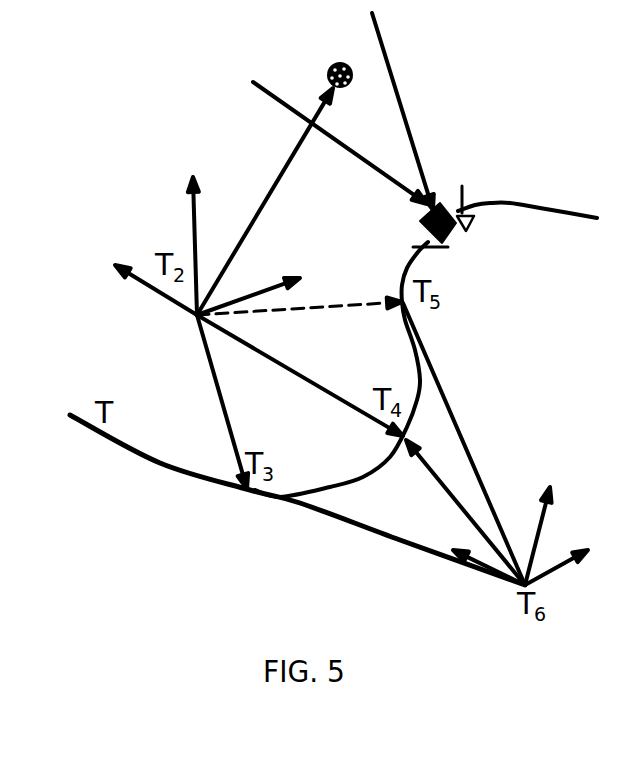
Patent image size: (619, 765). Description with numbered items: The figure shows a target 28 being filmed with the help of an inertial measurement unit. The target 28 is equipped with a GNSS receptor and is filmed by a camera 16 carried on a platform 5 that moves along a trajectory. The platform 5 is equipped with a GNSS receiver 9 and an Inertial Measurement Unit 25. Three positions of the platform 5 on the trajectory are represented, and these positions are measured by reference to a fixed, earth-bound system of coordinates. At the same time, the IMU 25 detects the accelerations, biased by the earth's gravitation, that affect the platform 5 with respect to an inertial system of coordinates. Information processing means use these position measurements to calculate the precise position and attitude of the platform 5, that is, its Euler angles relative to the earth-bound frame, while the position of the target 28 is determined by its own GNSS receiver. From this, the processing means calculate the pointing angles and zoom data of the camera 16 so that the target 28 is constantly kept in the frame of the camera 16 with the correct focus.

The target 28 is at (315, 78).
The camera 16 is at (409, 223).
The GNSS receiver 9 is at (460, 210).
The Inertial Measurement Unit 25 is at (470, 223).
The platform 5 is at (467, 228).